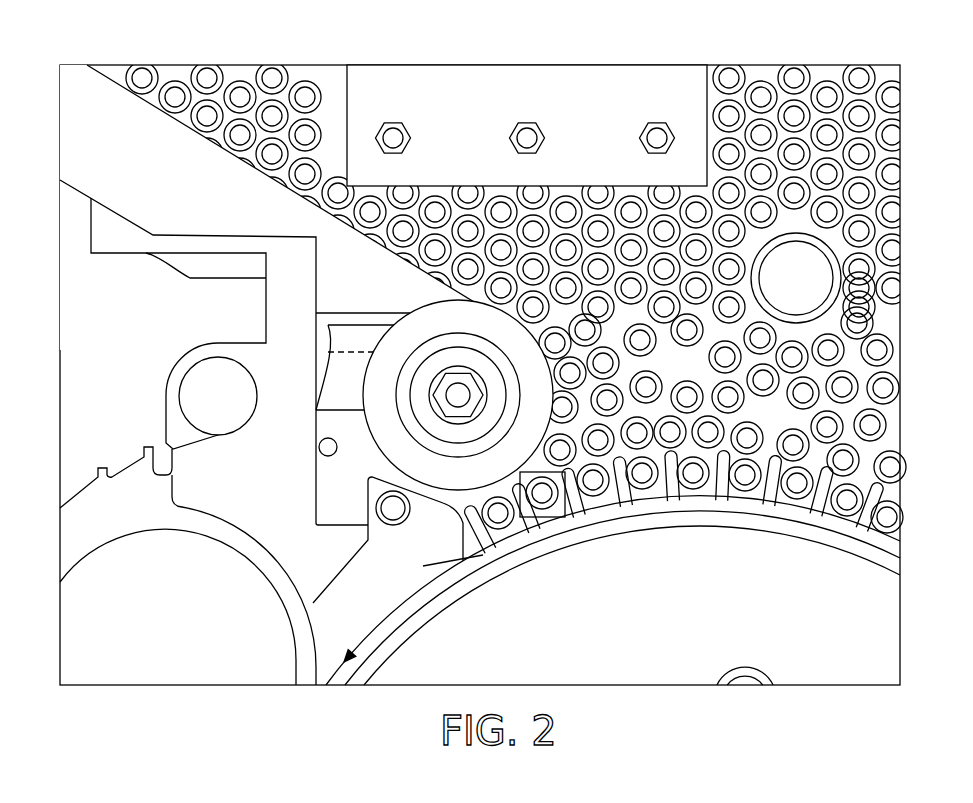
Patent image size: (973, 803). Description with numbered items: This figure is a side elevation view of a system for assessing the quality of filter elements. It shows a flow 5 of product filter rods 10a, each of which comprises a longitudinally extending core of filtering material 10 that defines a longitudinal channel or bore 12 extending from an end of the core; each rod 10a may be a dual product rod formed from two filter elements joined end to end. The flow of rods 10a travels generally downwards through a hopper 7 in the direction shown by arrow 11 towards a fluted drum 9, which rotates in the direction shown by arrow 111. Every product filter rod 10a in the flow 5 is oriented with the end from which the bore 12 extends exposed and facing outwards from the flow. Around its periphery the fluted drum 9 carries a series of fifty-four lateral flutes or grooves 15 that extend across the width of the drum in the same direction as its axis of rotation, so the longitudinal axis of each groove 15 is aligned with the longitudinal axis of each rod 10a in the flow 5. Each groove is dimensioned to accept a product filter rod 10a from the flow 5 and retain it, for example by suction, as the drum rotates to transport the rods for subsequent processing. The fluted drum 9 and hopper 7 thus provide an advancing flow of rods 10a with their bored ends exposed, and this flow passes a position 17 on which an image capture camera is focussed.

The flow of product filter rods 5 is at (731, 168).
The hopper 7 is at (313, 225).
The fluted drum 9 is at (737, 510).
The core of filtering material 10 is at (863, 305).
The product filter rod 10a is at (852, 422).
The arrow 11 is at (642, 402).
The longitudinal channel or bore 12 is at (857, 323).
The lateral flutes or grooves 15 is at (620, 492).
The position 17 is at (543, 518).
The arrow 111 is at (417, 600).